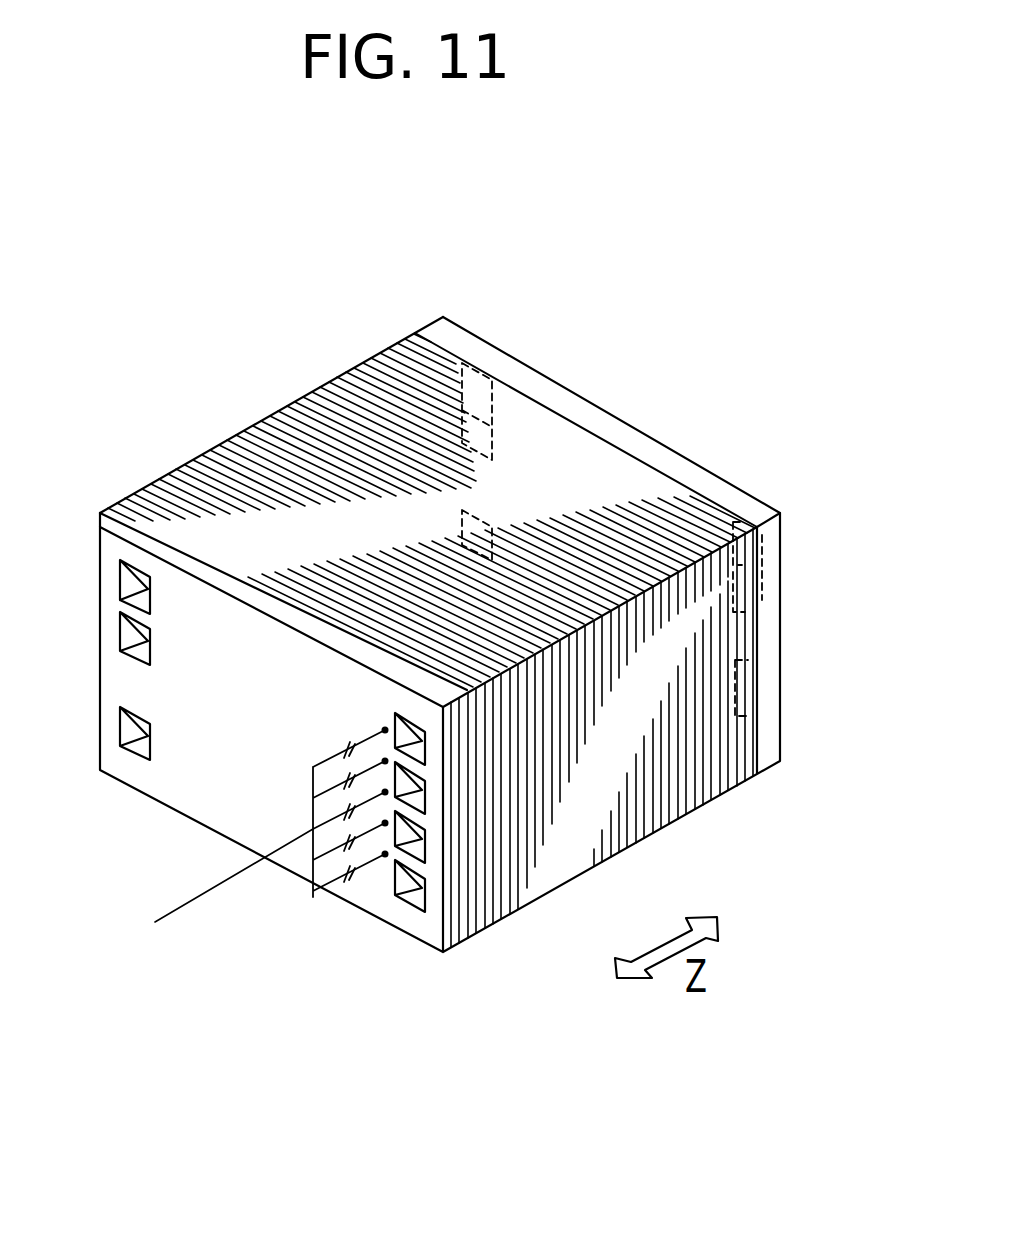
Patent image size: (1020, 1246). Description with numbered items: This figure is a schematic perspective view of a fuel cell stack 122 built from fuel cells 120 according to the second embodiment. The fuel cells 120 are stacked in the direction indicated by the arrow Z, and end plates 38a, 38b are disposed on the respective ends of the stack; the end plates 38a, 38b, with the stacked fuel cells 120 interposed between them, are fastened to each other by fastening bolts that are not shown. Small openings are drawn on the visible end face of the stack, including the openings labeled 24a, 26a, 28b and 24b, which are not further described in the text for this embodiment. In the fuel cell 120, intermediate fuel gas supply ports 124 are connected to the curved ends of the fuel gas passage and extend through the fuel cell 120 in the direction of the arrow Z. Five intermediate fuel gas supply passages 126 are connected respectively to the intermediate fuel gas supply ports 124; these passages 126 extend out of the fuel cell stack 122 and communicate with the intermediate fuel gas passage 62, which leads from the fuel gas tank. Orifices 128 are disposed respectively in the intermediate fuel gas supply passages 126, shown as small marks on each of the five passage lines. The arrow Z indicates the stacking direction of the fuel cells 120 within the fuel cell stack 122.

The fuel cell 120 is at (280, 408).
The fuel cell stack 122 is at (805, 306).
The end plate 38a is at (130, 521).
The end plate 38b is at (483, 340).
The opening 24a is at (152, 592).
The opening 26a is at (152, 642).
The opening 28b is at (138, 748).
The intermediate fuel gas supply port 124 is at (386, 729).
The opening 24b is at (393, 893).
The intermediate fuel gas supply passage 126 is at (313, 767).
The orifice 128 is at (345, 748).
The intermediate fuel gas passage 62 is at (214, 890).